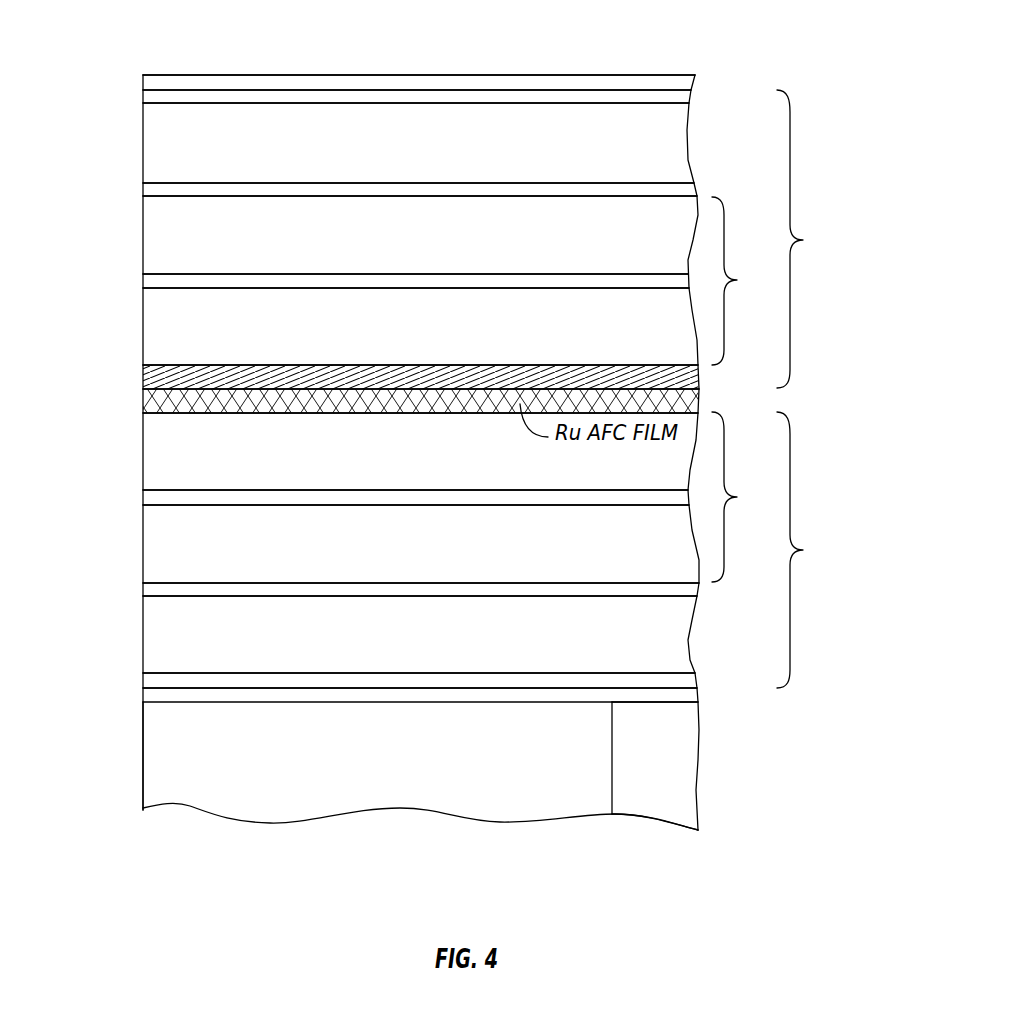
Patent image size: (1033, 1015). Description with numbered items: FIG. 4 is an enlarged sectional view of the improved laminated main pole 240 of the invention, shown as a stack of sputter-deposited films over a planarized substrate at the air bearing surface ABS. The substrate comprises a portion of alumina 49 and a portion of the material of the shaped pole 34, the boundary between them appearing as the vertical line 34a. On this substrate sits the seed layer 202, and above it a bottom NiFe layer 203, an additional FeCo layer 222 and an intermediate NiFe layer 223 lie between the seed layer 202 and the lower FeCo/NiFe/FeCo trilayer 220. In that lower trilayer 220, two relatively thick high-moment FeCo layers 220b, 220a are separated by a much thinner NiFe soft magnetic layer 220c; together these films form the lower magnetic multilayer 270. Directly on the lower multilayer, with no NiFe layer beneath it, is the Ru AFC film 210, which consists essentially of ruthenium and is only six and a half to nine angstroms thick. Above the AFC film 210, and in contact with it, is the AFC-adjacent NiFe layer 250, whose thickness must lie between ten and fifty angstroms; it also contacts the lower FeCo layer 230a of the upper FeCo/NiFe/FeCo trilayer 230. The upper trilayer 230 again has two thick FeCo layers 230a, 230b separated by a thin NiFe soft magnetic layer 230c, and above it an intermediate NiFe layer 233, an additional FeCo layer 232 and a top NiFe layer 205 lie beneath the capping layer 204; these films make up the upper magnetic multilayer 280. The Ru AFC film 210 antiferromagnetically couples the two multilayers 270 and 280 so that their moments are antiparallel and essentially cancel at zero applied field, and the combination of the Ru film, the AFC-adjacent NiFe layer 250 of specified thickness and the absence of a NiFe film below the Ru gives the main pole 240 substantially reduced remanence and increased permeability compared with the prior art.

The laminated main pole 240 is at (722, 42).
The capping layer 204 is at (150, 82).
The top NiFe layer 205 is at (150, 98).
The additional FeCo layer 232 is at (150, 145).
The intermediate NiFe layer 233 is at (150, 192).
The FeCo layer 230b is at (150, 237).
The NiFe soft magnetic layer 230c is at (150, 282).
The lower FeCo layer 230a is at (150, 327).
The AFC-adjacent NiFe layer 250 is at (150, 377).
The Ru AFC film 210 is at (150, 401).
The FeCo layer 220a is at (150, 452).
The NiFe soft magnetic layer 220c is at (150, 498).
The FeCo layer 220b is at (150, 543).
The intermediate NiFe layer 223 is at (150, 589).
The additional FeCo layer 222 is at (150, 652).
The bottom NiFe layer 203 is at (150, 680).
The seed layer 202 is at (150, 696).
The air bearing surface ABS is at (145, 755).
The alumina portion 49 is at (210, 793).
The boundary of trailing shield 34a is at (612, 768).
The shaped pole 34 is at (688, 763).
The upper FeCo/NiFe/FeCo trilayer 230 is at (746, 281).
The lower FeCo/NiFe/FeCo trilayer 220 is at (747, 497).
The upper magnetic multilayer 280 is at (811, 239).
The lower magnetic multilayer 270 is at (811, 550).